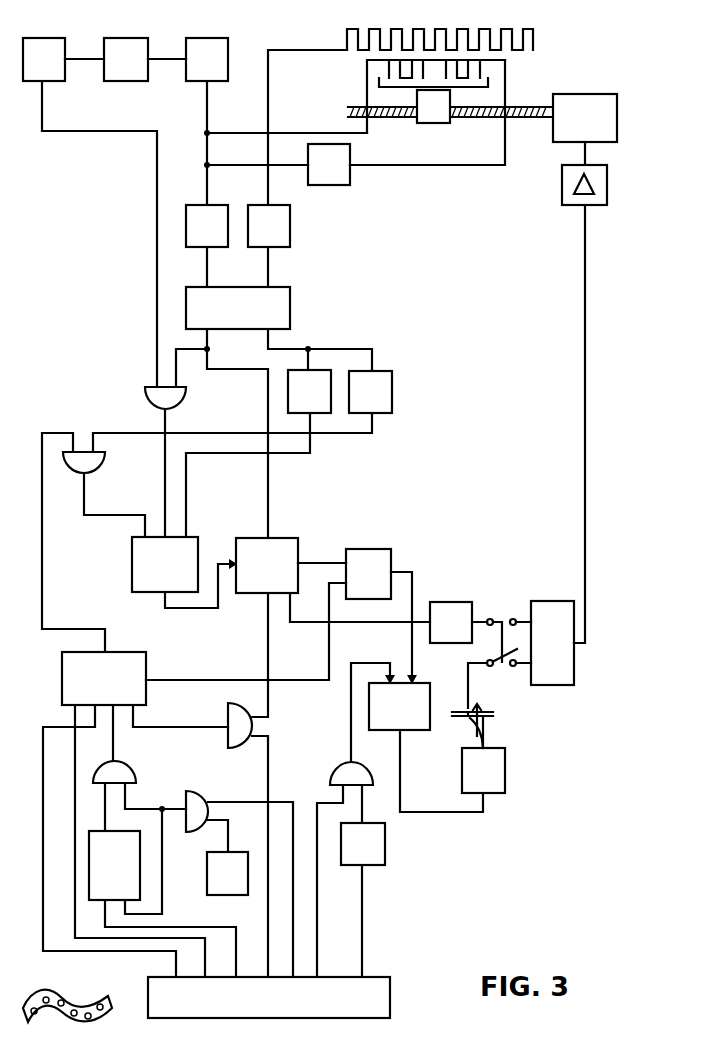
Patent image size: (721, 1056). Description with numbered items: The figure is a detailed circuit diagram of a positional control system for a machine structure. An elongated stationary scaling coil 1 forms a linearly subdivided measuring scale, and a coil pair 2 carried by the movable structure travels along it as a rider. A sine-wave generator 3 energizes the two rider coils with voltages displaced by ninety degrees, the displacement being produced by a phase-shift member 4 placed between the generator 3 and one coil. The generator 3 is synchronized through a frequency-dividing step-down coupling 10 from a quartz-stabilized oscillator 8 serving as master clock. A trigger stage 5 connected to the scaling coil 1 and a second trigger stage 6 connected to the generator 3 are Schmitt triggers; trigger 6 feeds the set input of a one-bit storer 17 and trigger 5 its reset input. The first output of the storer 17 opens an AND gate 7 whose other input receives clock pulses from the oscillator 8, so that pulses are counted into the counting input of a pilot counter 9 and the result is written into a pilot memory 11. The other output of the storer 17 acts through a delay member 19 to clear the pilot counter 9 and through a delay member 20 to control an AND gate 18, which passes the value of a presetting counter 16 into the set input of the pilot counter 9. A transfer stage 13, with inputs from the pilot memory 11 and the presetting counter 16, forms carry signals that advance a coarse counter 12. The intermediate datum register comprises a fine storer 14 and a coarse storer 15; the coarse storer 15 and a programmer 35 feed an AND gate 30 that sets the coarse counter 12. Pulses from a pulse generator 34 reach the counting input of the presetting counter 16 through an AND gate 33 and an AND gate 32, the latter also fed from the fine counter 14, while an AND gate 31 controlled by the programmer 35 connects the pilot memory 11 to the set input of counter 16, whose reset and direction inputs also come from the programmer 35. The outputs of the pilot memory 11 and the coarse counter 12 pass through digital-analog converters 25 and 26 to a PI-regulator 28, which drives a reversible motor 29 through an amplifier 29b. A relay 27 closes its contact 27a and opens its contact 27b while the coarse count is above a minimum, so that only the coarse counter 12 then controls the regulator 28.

The scaling coil 1 is at (533, 41).
The coil pair 2 is at (497, 74).
The sine-wave generator 3 is at (207, 59).
The phase-shift member 4 is at (329, 164).
The trigger stage 5 is at (269, 226).
The second trigger stage 6 is at (207, 226).
The AND gate 7 is at (143, 397).
The quartz-stabilized oscillator 8 is at (44, 59).
The pilot counter 9 is at (190, 537).
The step-down coupling 10 is at (126, 59).
The pilot memory 11 is at (289, 537).
The coarse counter 12 is at (421, 683).
The transfer stage 13 is at (368, 574).
The fine storer 14 is at (114, 865).
The coarse storer 15 is at (363, 844).
The presetting counter 16 is at (127, 650).
The 1-bit storer 17 is at (290, 307).
The AND gate 18 is at (100, 464).
The delay member 19 is at (309, 391).
The delay member 20 is at (370, 392).
The digital-analog converter 25 is at (451, 622).
The digital-analog converter 26 is at (483, 770).
The relay 27 is at (495, 716).
The relay contact 27a is at (502, 666).
The relay contact 27b is at (499, 614).
The PI-regulator 28 is at (552, 643).
The reversible motor 29 is at (588, 94).
The amplifier 29b is at (607, 190).
The AND gate 30 is at (346, 767).
The AND gate 31 is at (230, 708).
The AND gate 32 is at (137, 771).
The AND gate 33 is at (200, 793).
The pulse generator 34 is at (227, 873).
The programmer 35 is at (269, 997).